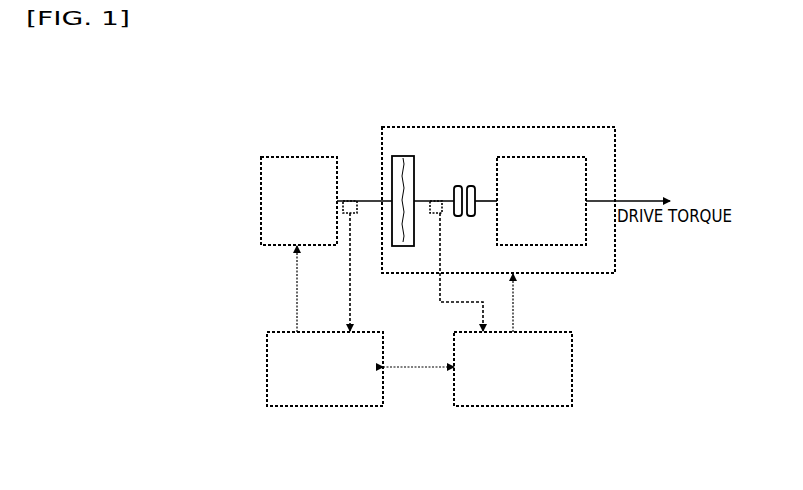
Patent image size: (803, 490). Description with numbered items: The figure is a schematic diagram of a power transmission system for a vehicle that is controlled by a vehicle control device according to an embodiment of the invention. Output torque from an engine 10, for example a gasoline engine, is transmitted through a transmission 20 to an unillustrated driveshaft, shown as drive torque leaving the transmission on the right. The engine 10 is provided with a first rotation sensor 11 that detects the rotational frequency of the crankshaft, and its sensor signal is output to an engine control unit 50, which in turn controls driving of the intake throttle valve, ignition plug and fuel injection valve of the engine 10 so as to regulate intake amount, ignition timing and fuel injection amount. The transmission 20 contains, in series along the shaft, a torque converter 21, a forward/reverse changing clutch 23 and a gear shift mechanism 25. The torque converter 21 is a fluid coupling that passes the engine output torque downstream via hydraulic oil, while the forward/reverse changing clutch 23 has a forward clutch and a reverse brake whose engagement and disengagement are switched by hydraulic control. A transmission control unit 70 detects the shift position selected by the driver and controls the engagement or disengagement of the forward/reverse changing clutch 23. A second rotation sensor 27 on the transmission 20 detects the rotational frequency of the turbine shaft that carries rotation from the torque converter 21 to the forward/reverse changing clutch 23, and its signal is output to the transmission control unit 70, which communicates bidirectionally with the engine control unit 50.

The engine 10 is at (294, 157).
The first rotation sensor 11 is at (358, 214).
The transmission 20 is at (598, 130).
The torque converter 21 is at (410, 150).
The forward/reverse changing clutch 23 is at (469, 182).
The gear shift mechanism 25 is at (541, 152).
The second rotation sensor 27 is at (436, 214).
The engine control unit 50 is at (330, 407).
The transmission control unit 70 is at (524, 407).